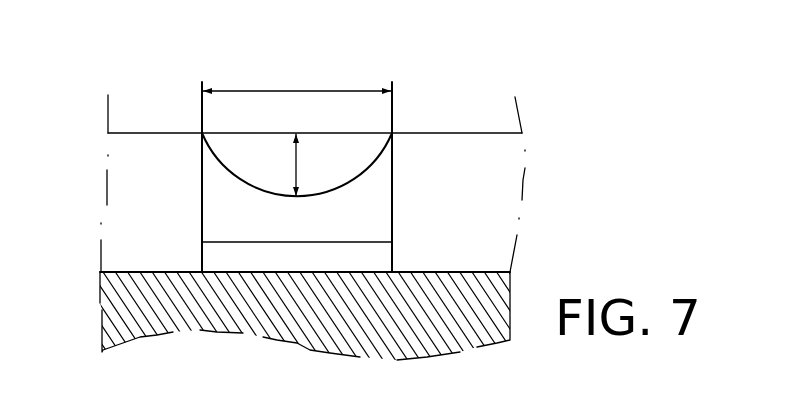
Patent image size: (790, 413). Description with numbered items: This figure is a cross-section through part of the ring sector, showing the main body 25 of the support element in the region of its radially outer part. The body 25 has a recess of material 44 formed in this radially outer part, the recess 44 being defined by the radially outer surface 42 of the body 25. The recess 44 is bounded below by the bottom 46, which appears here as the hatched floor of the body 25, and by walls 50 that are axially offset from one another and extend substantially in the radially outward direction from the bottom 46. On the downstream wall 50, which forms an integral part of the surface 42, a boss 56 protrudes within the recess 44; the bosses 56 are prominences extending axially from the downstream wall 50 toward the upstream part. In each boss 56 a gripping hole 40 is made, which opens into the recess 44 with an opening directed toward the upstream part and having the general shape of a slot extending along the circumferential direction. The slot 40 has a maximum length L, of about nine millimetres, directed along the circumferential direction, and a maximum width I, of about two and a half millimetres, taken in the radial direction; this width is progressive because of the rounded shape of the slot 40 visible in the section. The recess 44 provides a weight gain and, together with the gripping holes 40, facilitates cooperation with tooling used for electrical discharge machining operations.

The main body 25 is at (255, 304).
The gripping hole 40 is at (240, 150).
The radially outer surface 42 is at (122, 209).
The recess of material 44 is at (431, 215).
The bottom 46 is at (163, 271).
The wall 50 is at (125, 177).
The boss 56 is at (373, 192).
The length L is at (296, 89).
The maximum width I is at (299, 161).